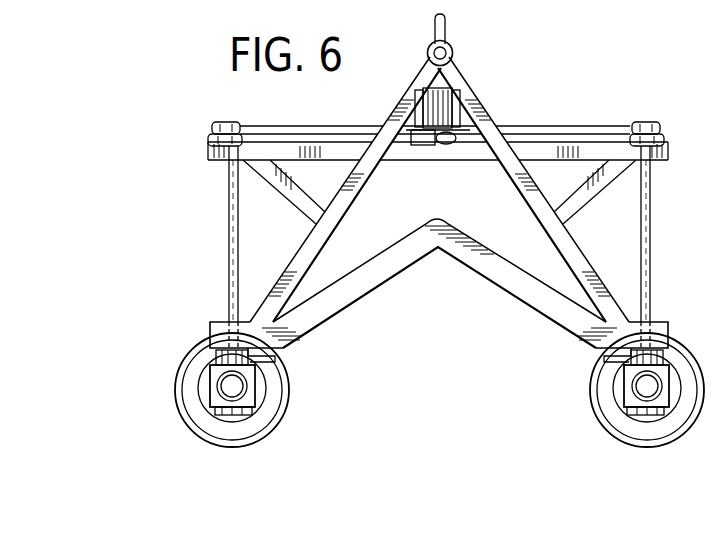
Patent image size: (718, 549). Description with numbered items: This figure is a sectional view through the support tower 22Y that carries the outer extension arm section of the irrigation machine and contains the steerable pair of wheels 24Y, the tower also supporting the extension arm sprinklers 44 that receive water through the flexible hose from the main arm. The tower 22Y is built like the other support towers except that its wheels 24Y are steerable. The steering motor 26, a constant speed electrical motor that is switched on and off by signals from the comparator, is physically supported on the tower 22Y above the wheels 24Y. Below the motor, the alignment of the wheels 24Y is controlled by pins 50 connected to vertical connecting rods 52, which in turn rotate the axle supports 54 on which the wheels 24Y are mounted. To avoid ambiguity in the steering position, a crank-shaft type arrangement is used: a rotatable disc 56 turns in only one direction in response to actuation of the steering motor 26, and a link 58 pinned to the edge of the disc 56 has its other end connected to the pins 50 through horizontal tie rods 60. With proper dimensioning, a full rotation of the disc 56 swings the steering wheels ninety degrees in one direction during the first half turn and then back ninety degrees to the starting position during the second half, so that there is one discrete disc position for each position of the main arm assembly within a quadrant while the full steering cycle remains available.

The support tower 22Y is at (486, 262).
The wheels 24Y is at (274, 398).
The steering motor 26 is at (440, 110).
The extension arm sprinklers 44 is at (447, 27).
The pin 50 is at (208, 135).
The vertical connecting rods 52 is at (229, 268).
The axle supports 54 is at (276, 359).
The rotatable disc 56 is at (445, 144).
The link 58 is at (420, 147).
The horizontal tie rods 60 is at (552, 127).